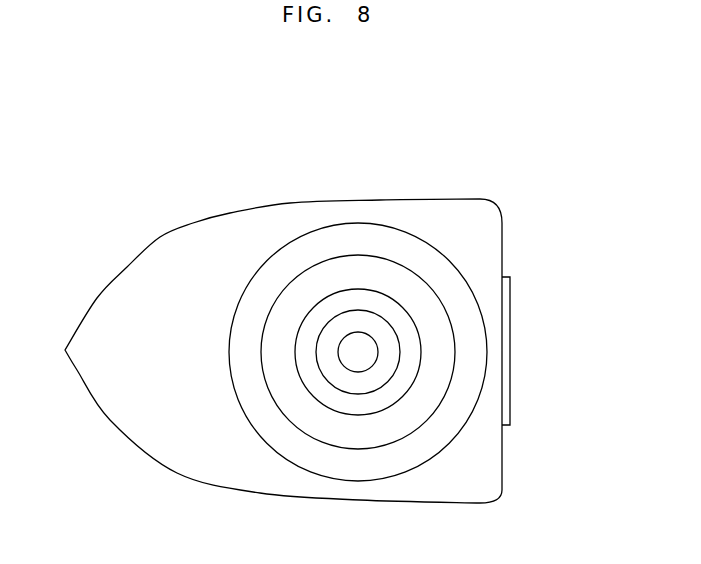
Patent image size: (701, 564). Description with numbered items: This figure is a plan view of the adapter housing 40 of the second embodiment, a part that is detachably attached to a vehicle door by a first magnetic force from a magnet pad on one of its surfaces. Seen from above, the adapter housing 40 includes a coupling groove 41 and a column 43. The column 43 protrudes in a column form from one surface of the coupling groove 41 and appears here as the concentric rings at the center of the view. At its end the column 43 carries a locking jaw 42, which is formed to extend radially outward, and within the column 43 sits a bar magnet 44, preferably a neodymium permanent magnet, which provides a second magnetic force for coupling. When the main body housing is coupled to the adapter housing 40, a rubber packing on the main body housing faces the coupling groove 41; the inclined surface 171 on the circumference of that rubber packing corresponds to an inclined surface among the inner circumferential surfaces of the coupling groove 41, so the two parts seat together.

The adapter housing 40 is at (195, 209).
The coupling groove 41 is at (427, 383).
The locking jaw 42 is at (402, 317).
The column 43 is at (500, 114).
The bar magnet 44 is at (357, 349).
The inclined surface 171 is at (327, 242).